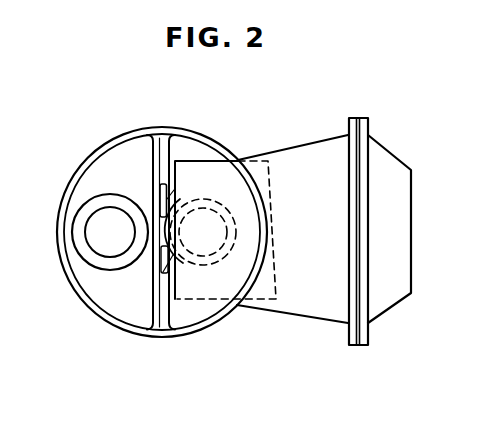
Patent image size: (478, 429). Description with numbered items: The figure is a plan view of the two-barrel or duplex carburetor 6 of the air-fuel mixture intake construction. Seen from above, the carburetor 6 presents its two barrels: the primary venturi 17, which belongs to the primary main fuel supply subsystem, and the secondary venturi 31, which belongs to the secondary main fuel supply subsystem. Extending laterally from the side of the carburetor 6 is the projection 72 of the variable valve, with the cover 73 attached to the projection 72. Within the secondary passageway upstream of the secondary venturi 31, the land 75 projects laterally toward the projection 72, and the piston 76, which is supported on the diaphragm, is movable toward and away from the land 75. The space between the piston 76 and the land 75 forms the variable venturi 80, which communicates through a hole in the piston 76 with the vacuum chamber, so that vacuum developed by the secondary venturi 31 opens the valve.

The two-barrel or duplex carburetor 6 is at (101, 146).
The venturi 17 is at (88, 256).
The venturi 31 is at (167, 262).
The projection 72 is at (320, 153).
The cover 73 is at (405, 184).
The land 75 is at (162, 198).
The piston 76 is at (181, 168).
The variable venturi 80 is at (165, 192).